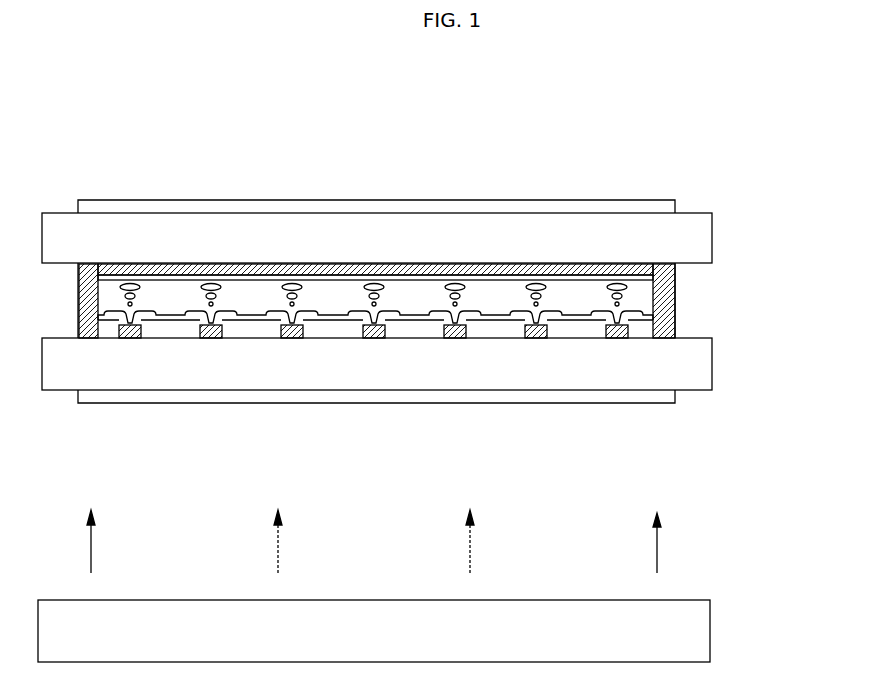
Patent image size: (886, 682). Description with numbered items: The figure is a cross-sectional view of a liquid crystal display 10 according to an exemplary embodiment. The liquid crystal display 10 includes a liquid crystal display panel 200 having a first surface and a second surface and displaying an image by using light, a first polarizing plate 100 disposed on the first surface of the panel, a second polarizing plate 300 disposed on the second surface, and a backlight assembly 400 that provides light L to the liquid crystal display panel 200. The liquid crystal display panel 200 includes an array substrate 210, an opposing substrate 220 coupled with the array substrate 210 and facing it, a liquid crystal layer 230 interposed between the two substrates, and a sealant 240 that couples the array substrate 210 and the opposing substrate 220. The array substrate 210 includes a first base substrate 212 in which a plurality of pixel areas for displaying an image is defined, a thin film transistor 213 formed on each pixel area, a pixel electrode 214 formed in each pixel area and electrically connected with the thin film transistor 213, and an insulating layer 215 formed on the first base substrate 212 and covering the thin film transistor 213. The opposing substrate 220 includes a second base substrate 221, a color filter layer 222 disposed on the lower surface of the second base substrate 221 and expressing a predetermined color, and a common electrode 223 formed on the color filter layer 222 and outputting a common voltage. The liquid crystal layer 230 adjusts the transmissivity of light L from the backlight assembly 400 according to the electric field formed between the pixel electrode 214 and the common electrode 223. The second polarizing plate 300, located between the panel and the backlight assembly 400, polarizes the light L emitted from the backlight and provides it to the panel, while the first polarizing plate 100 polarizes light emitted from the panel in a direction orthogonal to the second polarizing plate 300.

The liquid crystal display 10 is at (430, 88).
The first polarizing plate 100 is at (556, 208).
The liquid crystal display panel 200 is at (783, 243).
The array substrate 210 is at (92, 453).
The first base substrate 212 is at (95, 375).
The thin film transistor 213 is at (127, 342).
The pixel electrode 214 is at (157, 325).
The insulating layer 215 is at (182, 332).
The opposing substrate 220 is at (203, 138).
The second base substrate 221 is at (95, 224).
The color filter layer 222 is at (153, 270).
The common electrode 223 is at (238, 276).
The liquid crystal layer 230 is at (642, 293).
The sealant 240 is at (665, 305).
The second polarizing plate 300 is at (565, 397).
The backlight assembly 400 is at (698, 630).
The light L is at (657, 553).